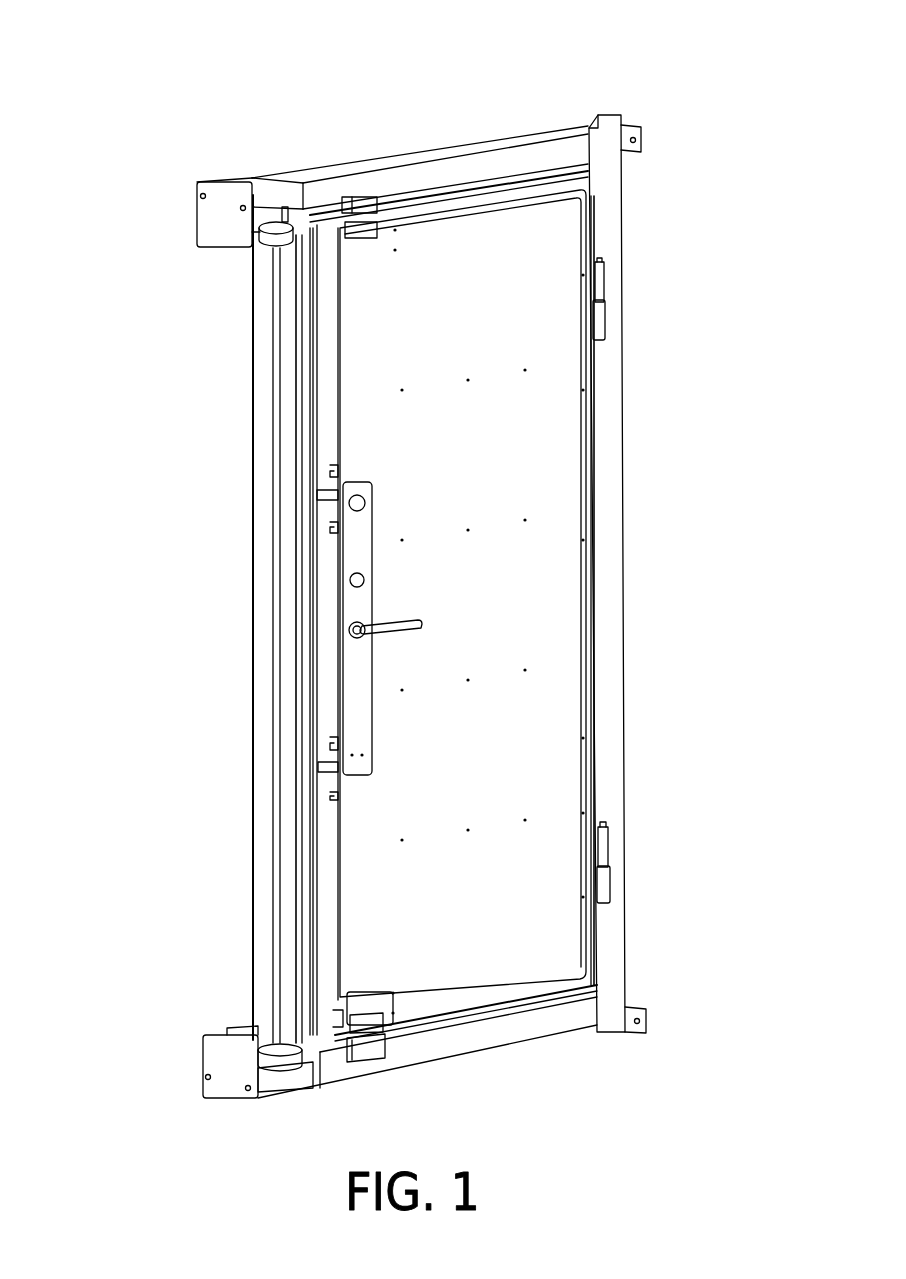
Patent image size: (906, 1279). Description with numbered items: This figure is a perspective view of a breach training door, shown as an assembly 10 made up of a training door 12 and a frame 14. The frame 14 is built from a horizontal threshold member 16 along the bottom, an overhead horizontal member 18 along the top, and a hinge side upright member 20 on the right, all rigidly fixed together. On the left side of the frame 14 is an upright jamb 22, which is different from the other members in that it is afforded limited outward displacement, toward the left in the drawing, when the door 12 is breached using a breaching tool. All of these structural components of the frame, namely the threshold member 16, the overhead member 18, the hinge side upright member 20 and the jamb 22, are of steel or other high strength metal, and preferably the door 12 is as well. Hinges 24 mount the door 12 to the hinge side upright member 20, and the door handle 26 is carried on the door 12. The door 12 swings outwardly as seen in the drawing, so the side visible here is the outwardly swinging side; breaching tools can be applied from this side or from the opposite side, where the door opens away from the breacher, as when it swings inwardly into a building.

The assembly 10 is at (124, 144).
The training door 12 is at (568, 545).
The frame 14 is at (637, 197).
The horizontal threshold member 16 is at (555, 1032).
The overhead horizontal member 18 is at (468, 170).
The hinge side upright member 20 is at (618, 712).
The upright jamb 22 is at (272, 920).
The hinges 24 is at (607, 264).
The door handle 26 is at (397, 623).